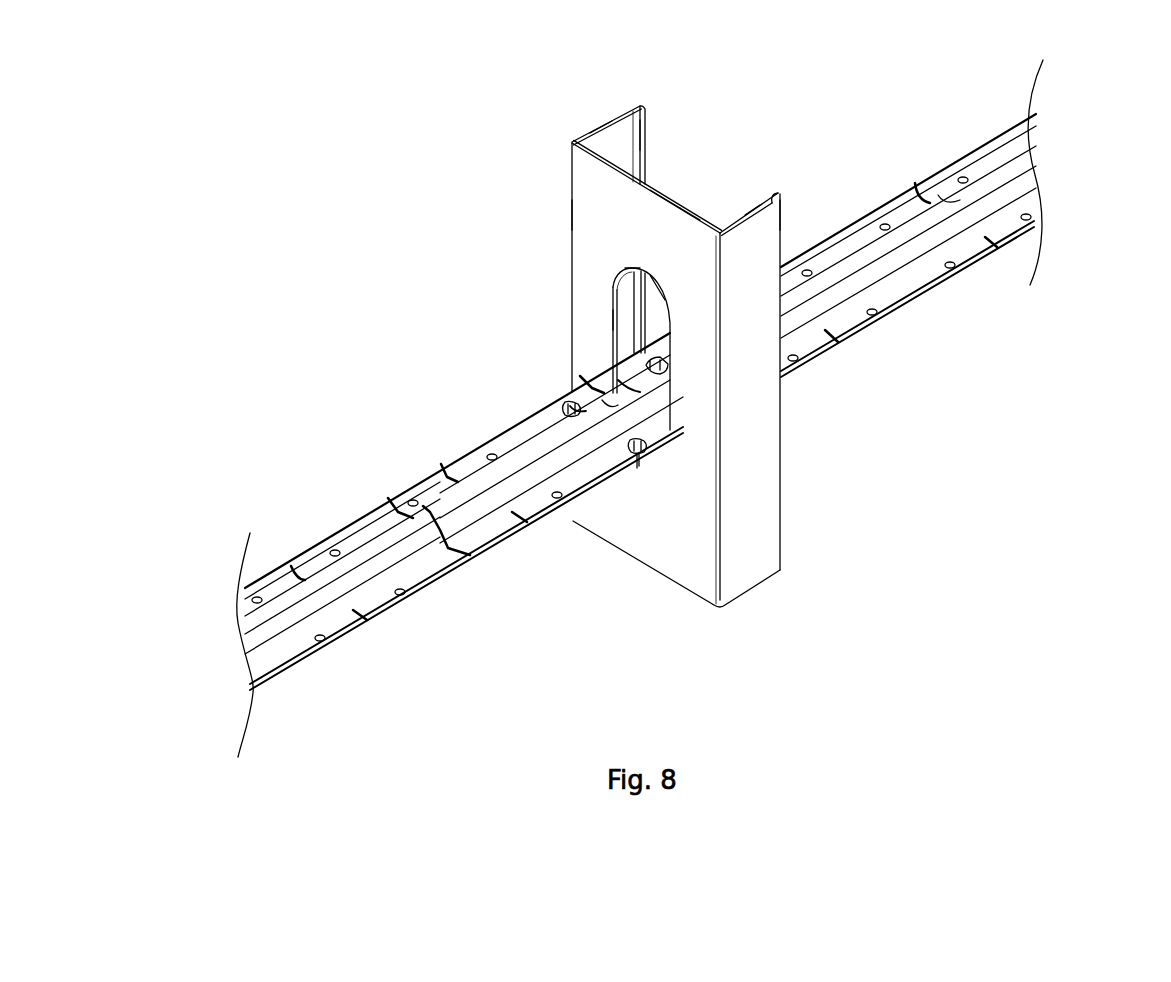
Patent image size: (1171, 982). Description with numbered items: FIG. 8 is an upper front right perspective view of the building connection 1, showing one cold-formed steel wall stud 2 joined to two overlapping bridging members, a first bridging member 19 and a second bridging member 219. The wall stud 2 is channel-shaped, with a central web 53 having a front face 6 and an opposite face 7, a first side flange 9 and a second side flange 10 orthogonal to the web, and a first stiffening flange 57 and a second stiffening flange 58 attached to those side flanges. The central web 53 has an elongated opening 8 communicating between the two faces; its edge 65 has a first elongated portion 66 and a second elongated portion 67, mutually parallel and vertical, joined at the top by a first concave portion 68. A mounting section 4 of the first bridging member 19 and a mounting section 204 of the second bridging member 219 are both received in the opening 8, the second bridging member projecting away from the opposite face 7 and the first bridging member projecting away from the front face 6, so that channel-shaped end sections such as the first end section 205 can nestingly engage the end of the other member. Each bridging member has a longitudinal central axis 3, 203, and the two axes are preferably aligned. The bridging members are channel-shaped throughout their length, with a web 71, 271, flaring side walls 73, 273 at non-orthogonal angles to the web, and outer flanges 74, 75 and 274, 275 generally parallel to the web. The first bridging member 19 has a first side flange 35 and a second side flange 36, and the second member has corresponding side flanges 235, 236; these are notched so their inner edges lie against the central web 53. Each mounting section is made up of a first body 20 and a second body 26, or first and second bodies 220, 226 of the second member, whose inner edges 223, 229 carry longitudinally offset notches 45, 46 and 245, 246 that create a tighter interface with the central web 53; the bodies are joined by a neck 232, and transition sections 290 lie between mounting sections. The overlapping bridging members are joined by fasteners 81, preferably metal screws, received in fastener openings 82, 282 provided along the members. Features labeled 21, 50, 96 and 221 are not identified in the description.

The building connection 1 is at (755, 87).
The first wall stud 2 is at (642, 103).
The longitudinal central axis 3 is at (222, 642).
The mounting section 4 is at (684, 442).
The front face 6 is at (578, 205).
The opposite face 7 is at (688, 212).
The opening 8 is at (655, 304).
The first side flange 9 is at (600, 124).
The second side flange 10 is at (742, 208).
The first bridging member 19 is at (342, 647).
The first body 20 is at (286, 590).
The beam upper flange 21 is at (274, 592).
The second body 26 is at (305, 578).
The first side flange 35 is at (250, 586).
The second side flange 36 is at (284, 673).
The notch 45 is at (272, 532).
The notch 46 is at (401, 643).
The bottom rail 50 is at (927, 286).
The central web 53 is at (667, 188).
The first stiffening flange 57 is at (642, 130).
The second stiffening flange 58 is at (781, 191).
The edge 65 is at (629, 268).
The first elongated portion 66 is at (616, 319).
The second elongated portion 67 is at (667, 355).
The first concave portion 68 is at (656, 299).
The web 71 is at (318, 598).
The flaring side wall 73 is at (342, 613).
The outer flange 74 is at (360, 524).
The outer flange 75 is at (450, 600).
The fastener 81 is at (652, 374).
The fastener opening 82 is at (331, 550).
The beam lower edge 96 is at (267, 698).
The longitudinal central axis 203 is at (1050, 158).
The mounting section 204 is at (582, 377).
The first end section 205 is at (398, 485).
The second bridging member 219 is at (899, 192).
The first body 220 is at (912, 211).
The connector web 221 is at (860, 238).
The inner edge 223 is at (587, 400).
The second body 226 is at (964, 217).
The inner edge 229 is at (930, 196).
The neck 232 is at (640, 430).
The first side flange 235 is at (820, 251).
The second side flange 236 is at (990, 290).
The notch 245 is at (910, 193).
The notch 246 is at (1034, 265).
The web 271 is at (1028, 147).
The flaring side wall 273 is at (1030, 185).
The outer flange 274 is at (1022, 120).
The outer flange 275 is at (1020, 240).
The fastener opening 282 is at (893, 195).
The transition section 290 is at (572, 457).